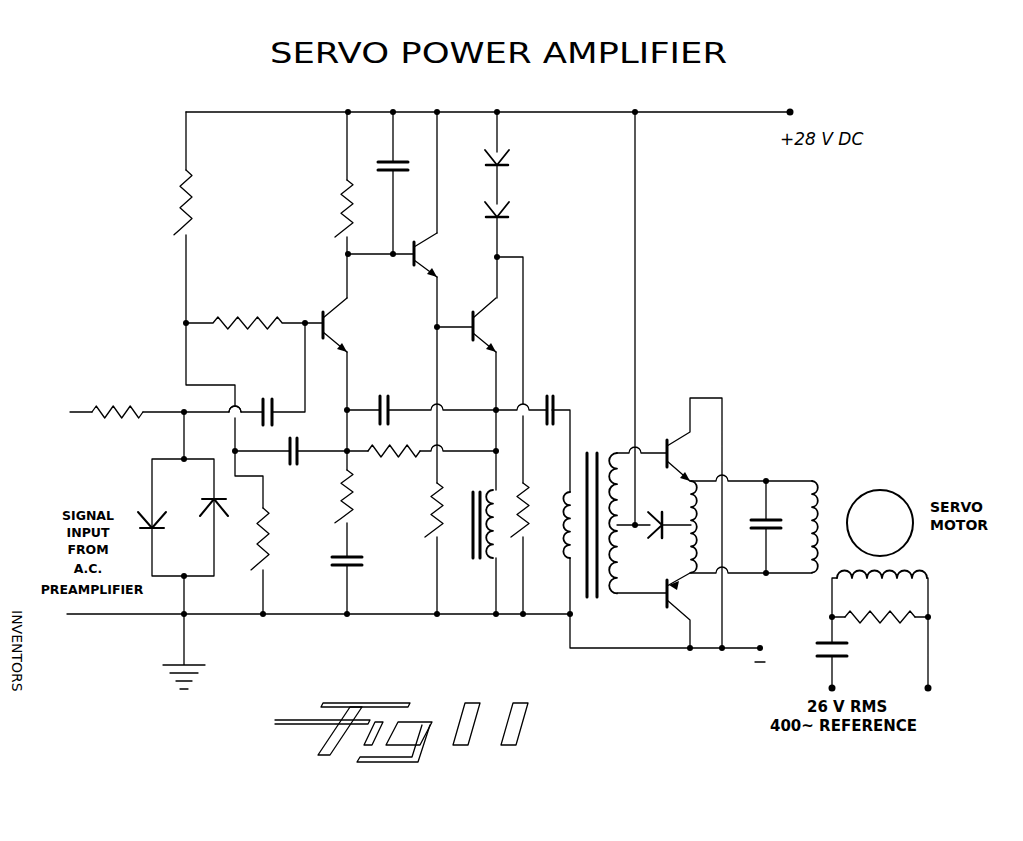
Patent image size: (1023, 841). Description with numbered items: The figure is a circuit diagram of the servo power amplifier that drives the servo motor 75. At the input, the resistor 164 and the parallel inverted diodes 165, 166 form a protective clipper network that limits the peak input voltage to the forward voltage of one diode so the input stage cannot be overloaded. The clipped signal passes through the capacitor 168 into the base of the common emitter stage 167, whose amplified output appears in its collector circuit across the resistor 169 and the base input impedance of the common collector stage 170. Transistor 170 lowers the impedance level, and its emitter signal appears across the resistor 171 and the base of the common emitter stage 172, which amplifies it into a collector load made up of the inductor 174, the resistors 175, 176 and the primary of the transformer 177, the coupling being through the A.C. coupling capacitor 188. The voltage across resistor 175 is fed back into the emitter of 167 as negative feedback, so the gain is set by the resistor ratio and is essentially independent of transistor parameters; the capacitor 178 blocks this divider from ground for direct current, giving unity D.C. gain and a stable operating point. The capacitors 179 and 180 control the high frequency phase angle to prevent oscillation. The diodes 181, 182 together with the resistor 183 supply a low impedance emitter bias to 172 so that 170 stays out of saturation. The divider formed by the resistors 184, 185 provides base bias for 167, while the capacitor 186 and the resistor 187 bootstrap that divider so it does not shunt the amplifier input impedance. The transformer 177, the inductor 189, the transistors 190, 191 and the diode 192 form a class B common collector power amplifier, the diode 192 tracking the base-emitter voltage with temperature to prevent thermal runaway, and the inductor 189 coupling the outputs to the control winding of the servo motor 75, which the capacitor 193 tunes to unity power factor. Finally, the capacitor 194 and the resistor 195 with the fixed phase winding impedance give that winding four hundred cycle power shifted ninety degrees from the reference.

The servo motor 75 is at (884, 490).
The resistor 164 is at (117, 402).
The diode 165 is at (159, 529).
The diode 166 is at (204, 498).
The common emitter stage 167 is at (348, 325).
The capacitor 168 is at (272, 404).
The resistor 169 is at (333, 208).
The common collector stage 170 is at (436, 255).
The resistor 171 is at (425, 510).
The common emitter stage 172 is at (478, 322).
The inductor 174 is at (479, 534).
The resistor 175 is at (359, 496).
The resistor 176 is at (394, 459).
The transformer 177 is at (590, 534).
The capacitor 178 is at (357, 570).
The capacitor 179 is at (389, 402).
The capacitor 180 is at (402, 157).
The diode 181 is at (516, 160).
The diode 182 is at (516, 213).
The resistor 183 is at (533, 510).
The resistor 184 is at (166, 202).
The resistor 185 is at (276, 539).
The capacitor 186 is at (299, 444).
The resistor 187 is at (245, 313).
The capacitor 188 is at (554, 402).
The inductor 189 is at (703, 490).
The transistor 190 is at (687, 523).
The transistor 191 is at (672, 610).
The diode 192 is at (663, 513).
The capacitor 193 is at (784, 527).
The capacitor 194 is at (848, 651).
The resistor 195 is at (853, 613).